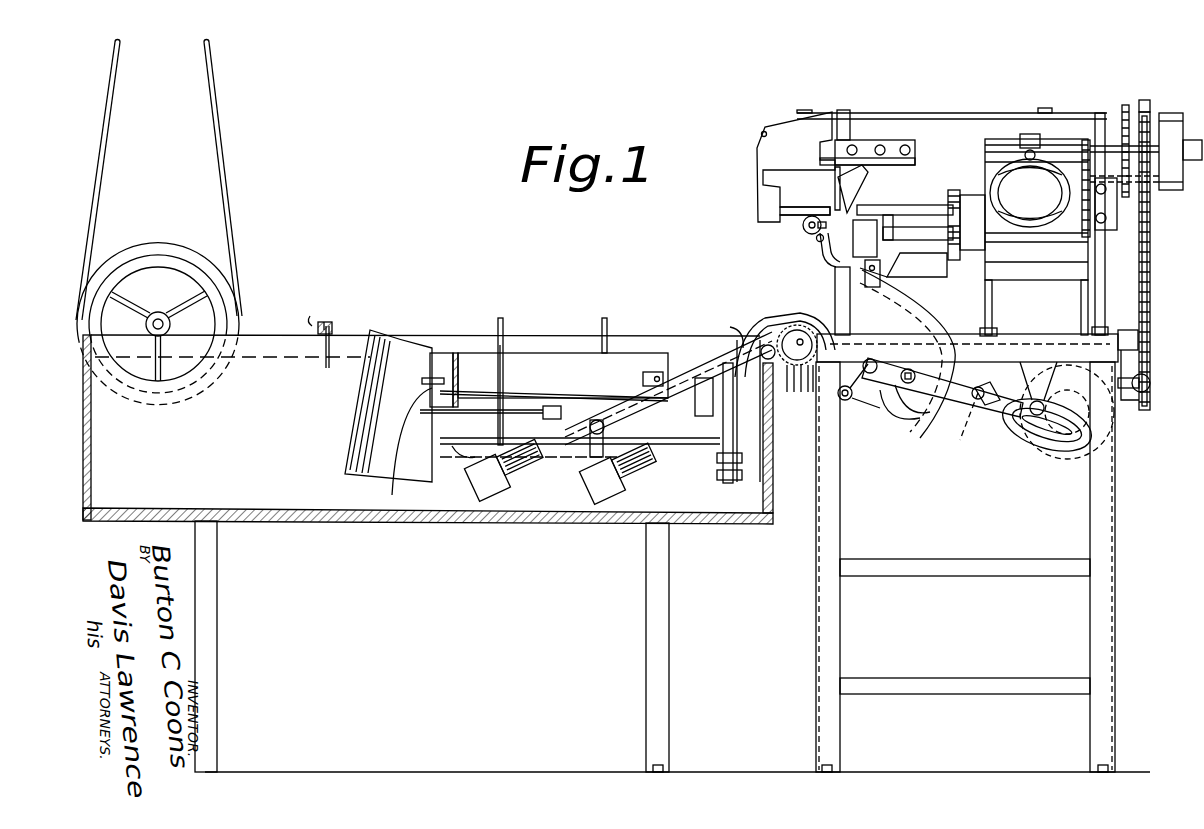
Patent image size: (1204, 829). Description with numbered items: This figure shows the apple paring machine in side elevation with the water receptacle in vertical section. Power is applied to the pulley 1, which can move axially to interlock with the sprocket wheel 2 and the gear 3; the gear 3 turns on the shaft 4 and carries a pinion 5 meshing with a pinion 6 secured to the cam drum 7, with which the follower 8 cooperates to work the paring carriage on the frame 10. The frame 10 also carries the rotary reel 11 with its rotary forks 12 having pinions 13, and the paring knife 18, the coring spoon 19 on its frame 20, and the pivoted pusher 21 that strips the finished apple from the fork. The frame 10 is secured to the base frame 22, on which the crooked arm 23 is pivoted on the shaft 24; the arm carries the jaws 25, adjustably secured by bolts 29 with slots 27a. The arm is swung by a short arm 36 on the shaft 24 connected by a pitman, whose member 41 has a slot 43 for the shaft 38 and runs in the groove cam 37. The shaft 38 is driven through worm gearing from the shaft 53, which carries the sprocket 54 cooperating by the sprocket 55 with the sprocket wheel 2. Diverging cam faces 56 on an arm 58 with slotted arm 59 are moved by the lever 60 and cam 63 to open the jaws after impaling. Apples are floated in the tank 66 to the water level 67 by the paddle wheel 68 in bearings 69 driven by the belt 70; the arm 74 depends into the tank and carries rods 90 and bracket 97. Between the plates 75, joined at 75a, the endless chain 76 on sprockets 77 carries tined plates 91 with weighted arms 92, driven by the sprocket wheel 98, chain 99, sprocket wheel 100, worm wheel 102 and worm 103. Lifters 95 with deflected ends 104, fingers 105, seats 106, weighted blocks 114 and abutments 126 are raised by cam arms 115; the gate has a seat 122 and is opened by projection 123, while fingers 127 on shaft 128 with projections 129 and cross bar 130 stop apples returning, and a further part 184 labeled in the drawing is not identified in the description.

The pulley 1 is at (1175, 112).
The sprocket wheel 2 is at (1146, 100).
The gear 3 is at (1125, 105).
The shaft 4 is at (1050, 146).
The pinion 5 is at (1086, 140).
The pinion 6 is at (1090, 240).
The cam drum 7 is at (1155, 218).
The follower 8 is at (1030, 148).
The frame 10 is at (1112, 285).
The rotary reel 11 is at (932, 227).
The article supporting device 12 is at (900, 205).
The pinion 13 is at (962, 195).
The knife 18 is at (860, 200).
The coring knife or spoon 19 is at (790, 215).
The frame 20 is at (760, 170).
The pivoted pusher 21 is at (855, 160).
The base frame 22 is at (1112, 520).
The arm 23 is at (922, 308).
The shaft 24 is at (840, 400).
The jaws 25 is at (905, 263).
The slots 27a is at (812, 262).
The bolts 29 is at (802, 228).
The short arm 36 is at (858, 395).
The groove cam 37 is at (1060, 440).
The shaft 38 is at (1030, 430).
The member 41 is at (955, 415).
The slot 43 is at (1037, 415).
The shaft 53 is at (1123, 395).
The sprocket 54 is at (1150, 383).
The sprocket 55 is at (1150, 325).
The cam faces 56 is at (865, 285).
The arm 58 is at (860, 301).
The slotted arm 59 is at (905, 415).
The link or lever 60 is at (1000, 360).
The cam 63 is at (985, 400).
The tank or receptacle 66 is at (553, 522).
The water level 67 is at (262, 360).
The paddle wheel 68 is at (230, 318).
The bearings 69 is at (176, 324).
The belt 70 is at (226, 196).
The arm 74 is at (740, 340).
The plates 75 is at (568, 362).
The connecting portion 75a is at (365, 395).
The endless chain 76 is at (475, 462).
The sprockets 77 is at (480, 438).
The rods 90 is at (685, 446).
The plate 91 is at (504, 334).
The weighted arms 92 is at (530, 480).
The lifters 95 is at (550, 378).
The bracket 97 is at (725, 460).
The sprocket wheel 98 is at (640, 482).
The sprocket chain 99 is at (699, 374).
The sprocket wheel 100 is at (790, 312).
The worm wheel 102 is at (745, 340).
The worm 103 is at (797, 389).
The downwardly turned portion 104 is at (405, 410).
The tines or fingers 105 is at (465, 378).
The seat 106 is at (425, 378).
The weighted block 114 is at (645, 372).
The cam arm 115 is at (595, 452).
The seat 122 is at (561, 405).
The projection 123 is at (820, 242).
The abutment 126 is at (482, 403).
The fingers or arms 127 is at (330, 350).
The shaft 128 is at (332, 324).
The projection 129 is at (309, 311).
The cross bar 130 is at (326, 322).
The post 184 is at (516, 362).